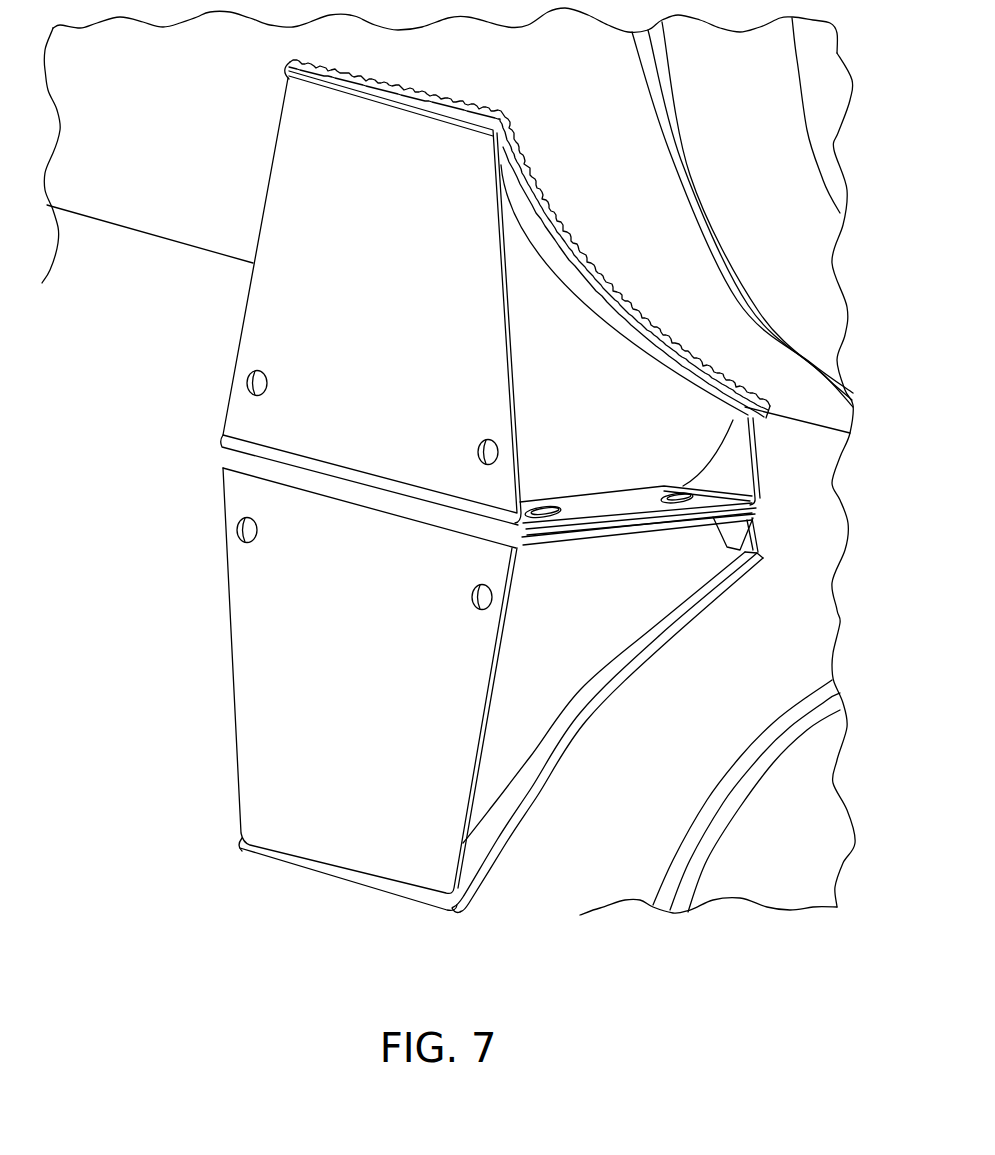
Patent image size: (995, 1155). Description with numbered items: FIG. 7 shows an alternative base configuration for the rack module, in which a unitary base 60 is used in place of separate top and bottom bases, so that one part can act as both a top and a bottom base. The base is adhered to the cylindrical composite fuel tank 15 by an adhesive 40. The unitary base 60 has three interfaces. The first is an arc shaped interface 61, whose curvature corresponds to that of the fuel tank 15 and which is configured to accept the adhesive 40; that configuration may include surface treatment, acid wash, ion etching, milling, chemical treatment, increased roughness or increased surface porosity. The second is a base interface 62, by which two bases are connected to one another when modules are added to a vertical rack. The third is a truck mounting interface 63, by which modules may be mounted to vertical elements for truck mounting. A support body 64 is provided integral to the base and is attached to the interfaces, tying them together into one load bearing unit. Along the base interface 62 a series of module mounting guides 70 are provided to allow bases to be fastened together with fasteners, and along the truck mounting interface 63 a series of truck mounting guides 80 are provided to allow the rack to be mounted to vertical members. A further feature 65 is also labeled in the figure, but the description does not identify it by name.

The fuel tank 15 is at (606, 244).
The adhesive 40 is at (468, 112).
The unitary base 60 is at (464, 303).
The arc shaped interface 61 is at (638, 666).
The base interface 62 is at (610, 522).
The truck mounting interface 63 is at (361, 301).
The support body 64 is at (573, 422).
The gap 65 is at (218, 448).
The module mounting guides 70 is at (540, 513).
The truck mounting guides 80 is at (259, 372).